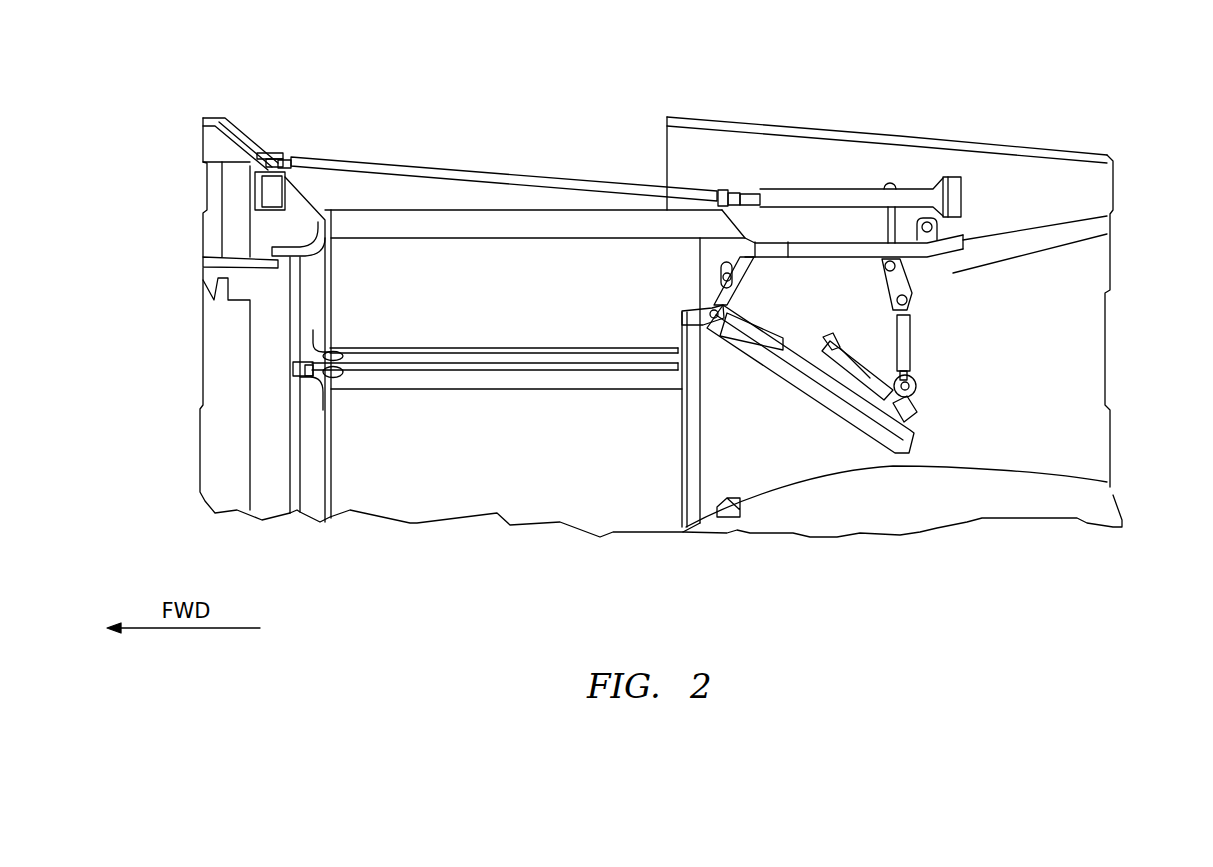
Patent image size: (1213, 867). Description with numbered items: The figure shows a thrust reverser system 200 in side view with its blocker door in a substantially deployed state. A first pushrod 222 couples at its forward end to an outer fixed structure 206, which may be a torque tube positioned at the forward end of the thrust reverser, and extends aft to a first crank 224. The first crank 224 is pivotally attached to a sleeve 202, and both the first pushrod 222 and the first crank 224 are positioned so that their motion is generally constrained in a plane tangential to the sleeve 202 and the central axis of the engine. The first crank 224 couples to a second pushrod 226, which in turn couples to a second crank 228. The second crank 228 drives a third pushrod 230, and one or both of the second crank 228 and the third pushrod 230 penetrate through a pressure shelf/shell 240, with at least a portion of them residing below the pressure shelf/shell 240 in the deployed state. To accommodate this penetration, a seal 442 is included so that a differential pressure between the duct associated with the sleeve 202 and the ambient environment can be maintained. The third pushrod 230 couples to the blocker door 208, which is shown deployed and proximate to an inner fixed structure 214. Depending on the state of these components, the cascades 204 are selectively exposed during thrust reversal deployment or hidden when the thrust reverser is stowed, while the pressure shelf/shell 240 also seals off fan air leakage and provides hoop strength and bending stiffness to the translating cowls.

The thrust reverser system 200 is at (1144, 128).
The sleeve 202 is at (833, 167).
The cascades 204 is at (533, 317).
The outer fixed structure 206 is at (272, 150).
The blocker door 208 is at (803, 385).
The inner fixed structure 214 is at (987, 487).
The first pushrod 222 is at (397, 157).
The first crank 224 is at (868, 193).
The second pushrod 226 is at (897, 240).
The second crank 228 is at (897, 270).
The third pushrod 230 is at (910, 328).
The pressure shelf/shell 240 is at (812, 250).
The seal 442 is at (912, 413).